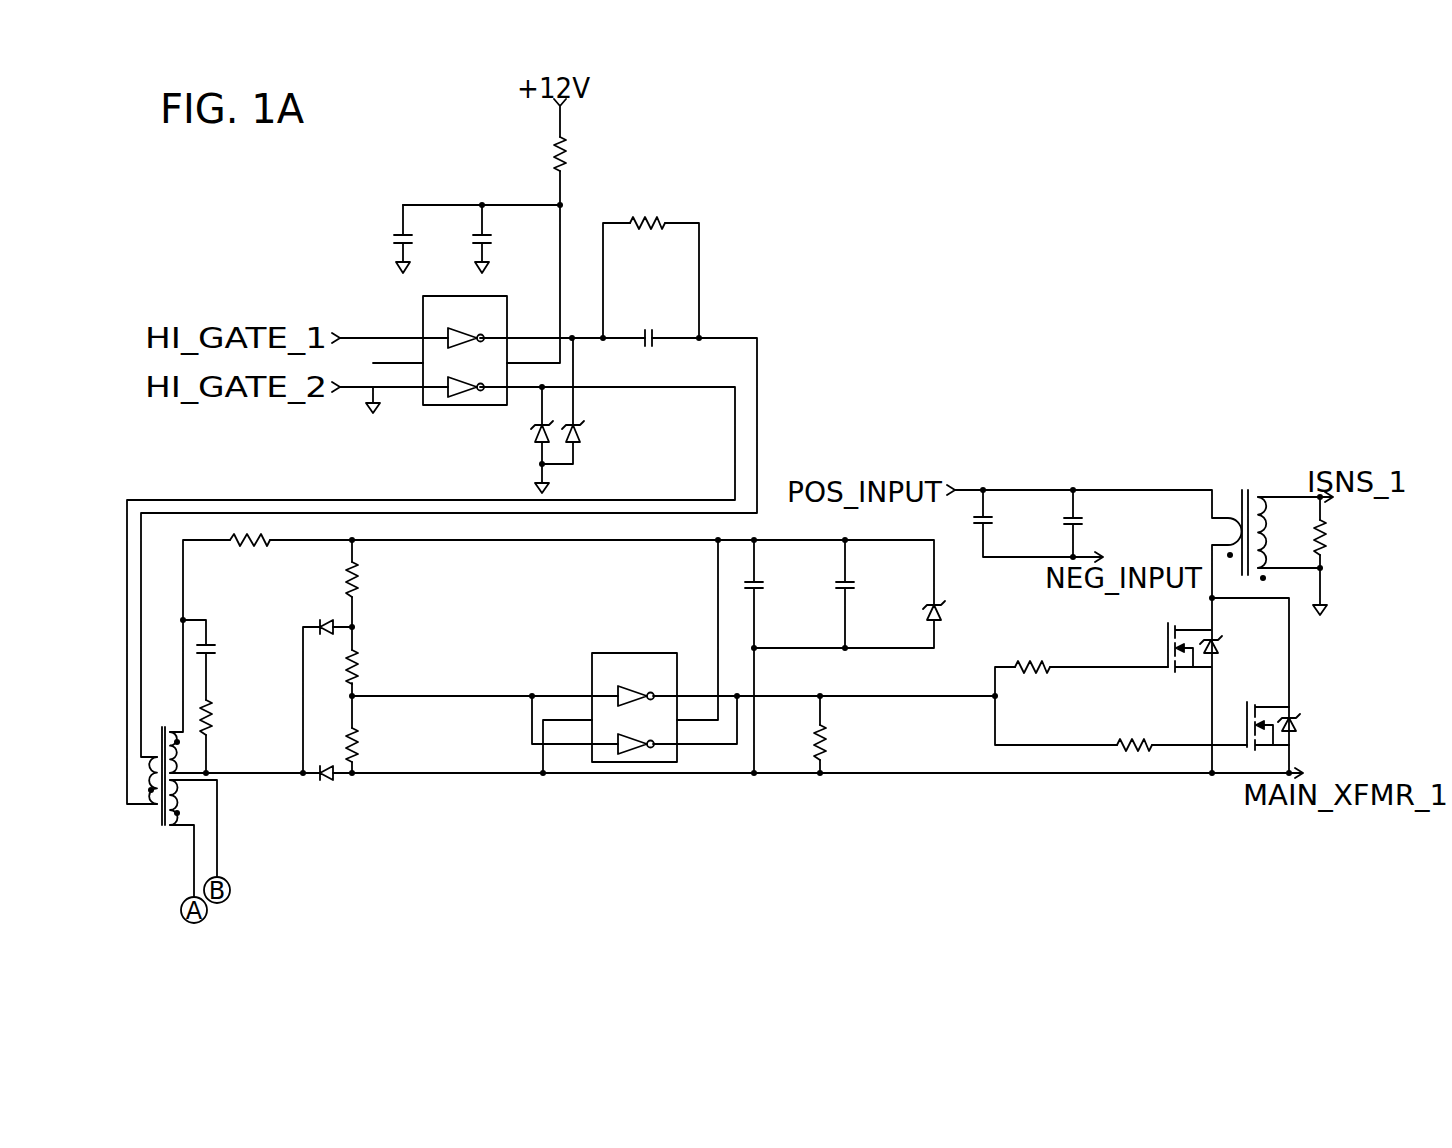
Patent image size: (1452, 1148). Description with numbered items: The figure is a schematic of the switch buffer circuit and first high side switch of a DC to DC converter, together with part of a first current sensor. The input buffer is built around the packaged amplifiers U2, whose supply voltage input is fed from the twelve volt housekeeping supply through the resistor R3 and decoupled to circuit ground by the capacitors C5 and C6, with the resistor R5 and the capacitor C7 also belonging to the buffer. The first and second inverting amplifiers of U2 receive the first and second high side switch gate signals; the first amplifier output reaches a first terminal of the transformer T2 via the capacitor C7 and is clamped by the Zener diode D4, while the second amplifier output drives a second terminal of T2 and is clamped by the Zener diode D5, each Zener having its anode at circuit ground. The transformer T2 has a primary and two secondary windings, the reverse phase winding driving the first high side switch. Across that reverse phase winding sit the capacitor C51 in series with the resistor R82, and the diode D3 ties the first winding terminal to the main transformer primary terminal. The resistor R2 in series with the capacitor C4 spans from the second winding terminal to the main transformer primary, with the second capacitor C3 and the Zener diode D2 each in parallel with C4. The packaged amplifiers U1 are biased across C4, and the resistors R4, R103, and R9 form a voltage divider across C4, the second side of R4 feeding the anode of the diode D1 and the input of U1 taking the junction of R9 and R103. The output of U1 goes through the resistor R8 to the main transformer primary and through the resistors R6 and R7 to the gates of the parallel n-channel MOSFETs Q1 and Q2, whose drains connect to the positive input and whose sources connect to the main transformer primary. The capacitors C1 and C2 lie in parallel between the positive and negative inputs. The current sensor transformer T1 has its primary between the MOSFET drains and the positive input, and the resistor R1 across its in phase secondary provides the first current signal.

The resistor R3 is at (581, 153).
The capacitor C6 is at (421, 233).
The capacitor C5 is at (500, 233).
The resistor R5 is at (649, 208).
The capacitor C7 is at (651, 319).
The packaged amplifiers U2 is at (460, 370).
The Zener diode D5 is at (525, 432).
The Zener diode D4 is at (589, 432).
The resistor R2 is at (251, 526).
The resistor R4 is at (371, 579).
The resistor R103 is at (388, 668).
The resistor R9 is at (371, 744).
The diode D1 is at (319, 614).
The diode D3 is at (317, 785).
The capacitor C51 is at (232, 647).
The resistor R82 is at (234, 717).
The transformer T2 is at (164, 793).
The packaged amplifiers U1 is at (632, 691).
The capacitor C4 is at (775, 585).
The second capacitor C3 is at (866, 585).
The Zener diode D2 is at (954, 612).
The resistor R8 is at (842, 742).
The capacitor C2 is at (1004, 522).
The capacitor C1 is at (1089, 525).
The transformer T1 is at (1246, 518).
The resistor R1 is at (1338, 538).
The first n-channel MOSFET Q1 is at (1191, 634).
The second n-channel MOSFET Q2 is at (1293, 726).
The resistor R6 is at (1033, 651).
The resistor R7 is at (1137, 729).